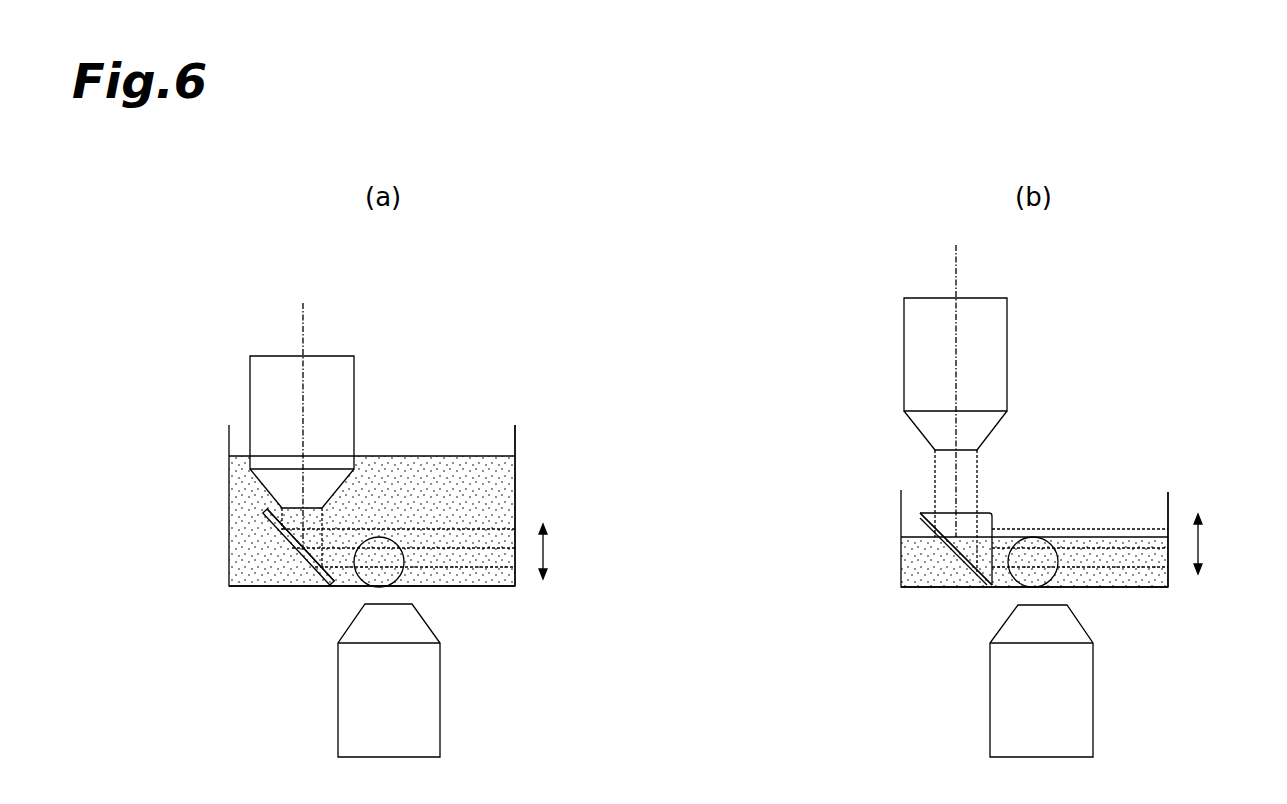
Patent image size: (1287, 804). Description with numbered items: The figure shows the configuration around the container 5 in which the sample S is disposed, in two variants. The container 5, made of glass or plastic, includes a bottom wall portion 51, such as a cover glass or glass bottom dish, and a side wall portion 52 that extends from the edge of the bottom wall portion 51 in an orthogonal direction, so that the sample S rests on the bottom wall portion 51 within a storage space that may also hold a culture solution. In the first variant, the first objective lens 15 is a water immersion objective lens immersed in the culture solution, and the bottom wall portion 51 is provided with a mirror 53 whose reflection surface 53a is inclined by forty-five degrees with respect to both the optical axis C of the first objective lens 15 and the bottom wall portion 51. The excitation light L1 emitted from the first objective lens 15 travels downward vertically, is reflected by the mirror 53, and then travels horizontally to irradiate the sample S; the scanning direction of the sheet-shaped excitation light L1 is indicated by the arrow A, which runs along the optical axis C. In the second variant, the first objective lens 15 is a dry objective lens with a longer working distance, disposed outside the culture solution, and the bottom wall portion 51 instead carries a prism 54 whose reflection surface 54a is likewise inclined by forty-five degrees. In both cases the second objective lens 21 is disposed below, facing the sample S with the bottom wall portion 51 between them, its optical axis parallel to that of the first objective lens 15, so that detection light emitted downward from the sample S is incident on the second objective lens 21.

The container 5 is at (229, 478).
The bottom wall portion 51 is at (483, 588).
The side wall portion 52 is at (515, 440).
The first objective lens 15 is at (250, 387).
The second objective lens 21 is at (440, 703).
The mirror 53 is at (280, 554).
The reflection surface 53a is at (318, 564).
The prism 54 is at (992, 520).
The reflection surface 54a is at (968, 556).
The sample S is at (400, 572).
The optical axis C is at (302, 322).
The excitation light L1 is at (487, 567).
The arrow A is at (548, 557).